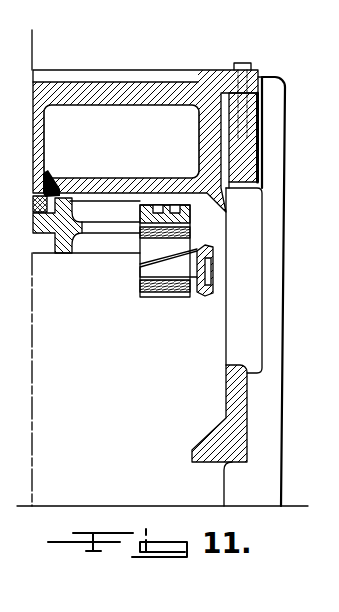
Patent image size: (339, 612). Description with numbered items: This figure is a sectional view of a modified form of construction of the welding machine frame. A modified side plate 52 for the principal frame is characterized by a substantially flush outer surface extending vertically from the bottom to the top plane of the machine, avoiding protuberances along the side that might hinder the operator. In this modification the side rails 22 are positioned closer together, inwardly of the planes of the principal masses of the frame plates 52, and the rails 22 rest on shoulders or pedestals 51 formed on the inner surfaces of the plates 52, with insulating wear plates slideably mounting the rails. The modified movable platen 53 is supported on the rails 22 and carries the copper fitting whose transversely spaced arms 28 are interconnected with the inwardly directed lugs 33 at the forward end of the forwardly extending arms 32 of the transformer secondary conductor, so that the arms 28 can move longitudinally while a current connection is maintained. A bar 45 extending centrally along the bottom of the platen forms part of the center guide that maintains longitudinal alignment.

The side rails 22 is at (257, 100).
The arms 28 is at (138, 223).
The forwardly extending arm 32 is at (209, 296).
The lug 33 is at (141, 268).
The bar 45 is at (52, 178).
The shoulders or pedestals 51 is at (250, 204).
The side plate 52 is at (270, 303).
The movable platen 53 is at (150, 92).